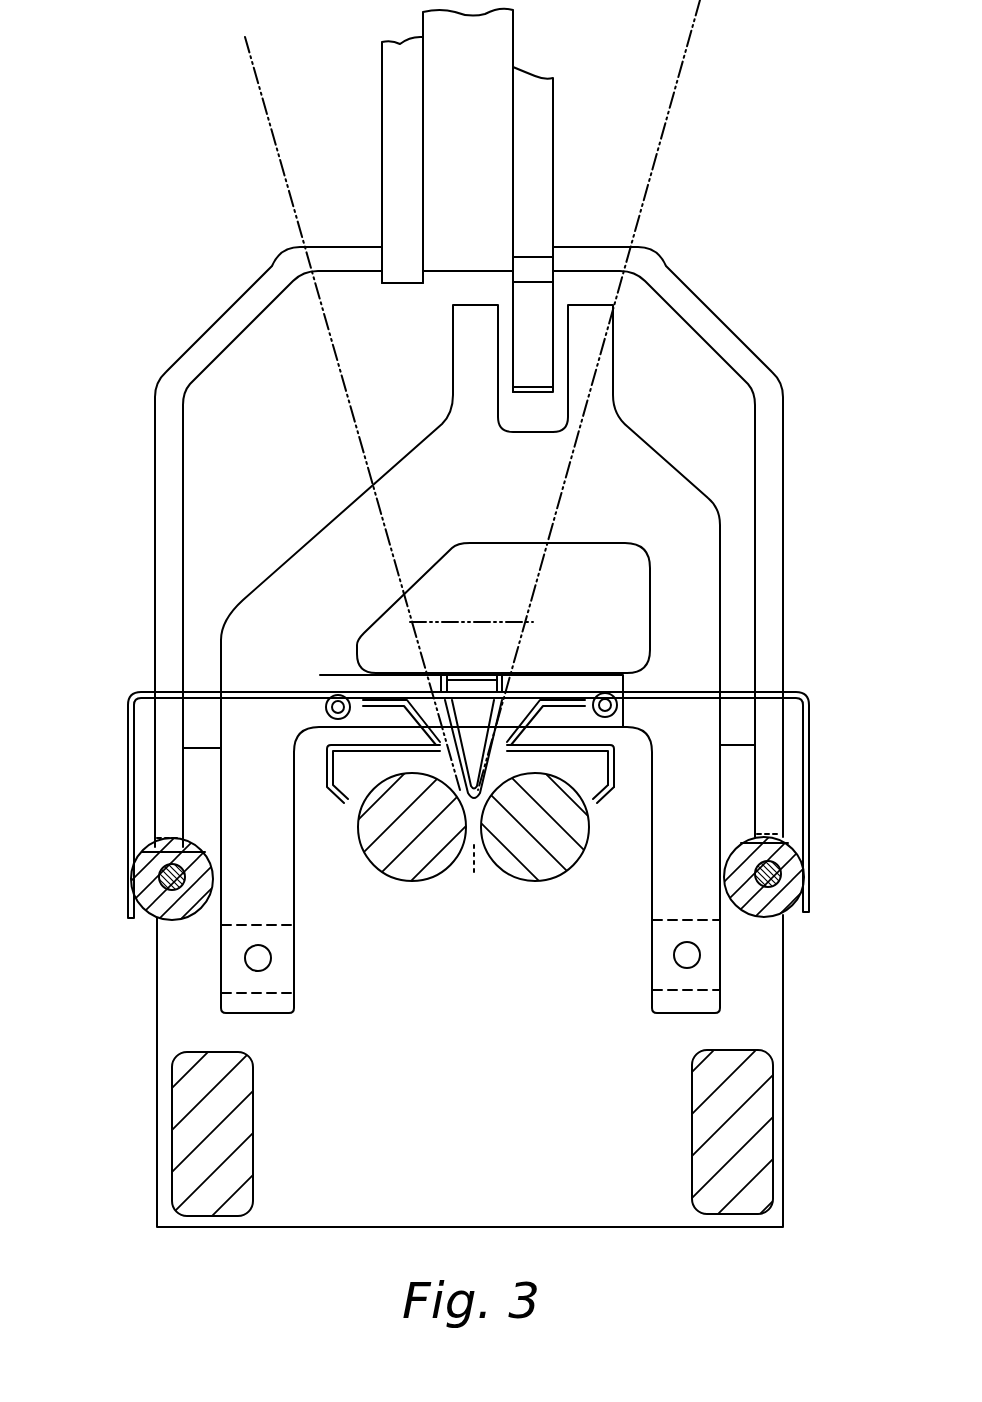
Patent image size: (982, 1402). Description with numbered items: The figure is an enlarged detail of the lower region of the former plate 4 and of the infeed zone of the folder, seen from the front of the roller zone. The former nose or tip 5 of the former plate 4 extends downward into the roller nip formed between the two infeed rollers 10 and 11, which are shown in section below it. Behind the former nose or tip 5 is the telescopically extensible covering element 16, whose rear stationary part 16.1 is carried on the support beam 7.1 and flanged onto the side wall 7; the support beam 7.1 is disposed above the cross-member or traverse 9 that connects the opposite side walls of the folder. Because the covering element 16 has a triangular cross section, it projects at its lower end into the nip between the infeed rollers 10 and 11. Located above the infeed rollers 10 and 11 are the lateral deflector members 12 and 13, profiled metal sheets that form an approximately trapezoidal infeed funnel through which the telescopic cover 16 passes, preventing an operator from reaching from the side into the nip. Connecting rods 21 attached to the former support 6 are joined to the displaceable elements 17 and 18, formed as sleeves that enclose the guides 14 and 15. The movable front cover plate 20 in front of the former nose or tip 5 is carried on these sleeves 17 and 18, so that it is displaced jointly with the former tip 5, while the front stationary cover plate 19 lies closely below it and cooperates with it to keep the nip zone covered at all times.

The former plate 4 is at (273, 138).
The former nose or tip 5 is at (448, 650).
The former support 6 is at (493, 215).
The side wall 7 is at (169, 1028).
The support beam 7.1 is at (287, 560).
The cross-member or traverse 9 is at (183, 1140).
The infeed roller 10 is at (393, 853).
The infeed roller 11 is at (533, 862).
The lateral deflector member 12 is at (327, 760).
The lateral deflector member 13 is at (615, 767).
The guide 14 is at (159, 873).
The guide 15 is at (780, 882).
The telescopically extensible covering element 16 is at (487, 657).
The stationary part of covering element 16.1 is at (508, 668).
The displaceable element 17 is at (158, 915).
The displaceable element 18 is at (807, 827).
The front stationary cover plate 19 is at (591, 800).
The front cover plate 20 is at (128, 715).
The connecting rod 21 is at (176, 372).